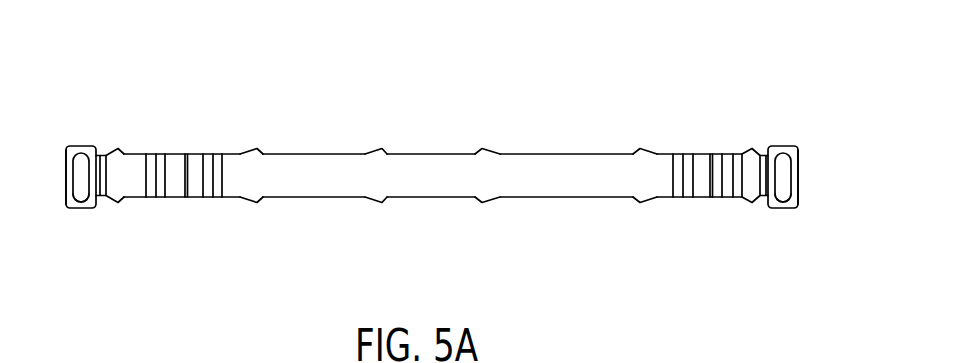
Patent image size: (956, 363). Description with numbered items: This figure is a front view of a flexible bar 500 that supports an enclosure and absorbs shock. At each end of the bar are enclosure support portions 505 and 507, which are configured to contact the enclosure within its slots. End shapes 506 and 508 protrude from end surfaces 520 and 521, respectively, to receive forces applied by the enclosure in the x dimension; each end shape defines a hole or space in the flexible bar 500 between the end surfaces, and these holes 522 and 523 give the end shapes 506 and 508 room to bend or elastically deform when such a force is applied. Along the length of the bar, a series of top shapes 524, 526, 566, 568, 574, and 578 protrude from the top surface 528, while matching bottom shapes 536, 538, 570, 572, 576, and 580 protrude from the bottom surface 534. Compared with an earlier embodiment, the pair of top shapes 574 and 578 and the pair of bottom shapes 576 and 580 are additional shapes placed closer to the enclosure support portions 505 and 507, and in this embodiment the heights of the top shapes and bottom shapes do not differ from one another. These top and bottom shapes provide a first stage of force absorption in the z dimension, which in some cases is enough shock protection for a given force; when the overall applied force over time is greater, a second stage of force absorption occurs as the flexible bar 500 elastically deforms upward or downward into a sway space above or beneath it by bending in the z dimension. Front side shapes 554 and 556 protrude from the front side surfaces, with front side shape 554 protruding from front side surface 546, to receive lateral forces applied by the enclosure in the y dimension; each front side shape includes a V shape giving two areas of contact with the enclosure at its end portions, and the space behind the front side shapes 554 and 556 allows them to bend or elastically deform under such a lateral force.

The flexible bar 500 is at (224, 69).
The enclosure support portion 505 is at (787, 145).
The end shape 506 is at (799, 183).
The enclosure support portion 507 is at (80, 146).
The end shape 508 is at (64, 193).
The end surface 520 is at (782, 160).
The end surface 521 is at (83, 187).
The hole 522 is at (786, 192).
The hole 523 is at (88, 162).
The top shape 524 is at (382, 149).
The top shape 526 is at (482, 149).
The top surface 528 is at (430, 154).
The bottom surface 534 is at (425, 197).
The bottom shape 536 is at (380, 203).
The bottom shape 538 is at (483, 203).
The front side surface 546 is at (327, 154).
The front side shape 554 is at (702, 165).
The front side shape 556 is at (175, 163).
The top shape 566 is at (257, 149).
The top shape 568 is at (640, 149).
The bottom shape 570 is at (257, 203).
The bottom shape 572 is at (640, 203).
The top shape 574 is at (118, 149).
The bottom shape 576 is at (120, 203).
The top shape 578 is at (752, 149).
The bottom shape 580 is at (741, 203).